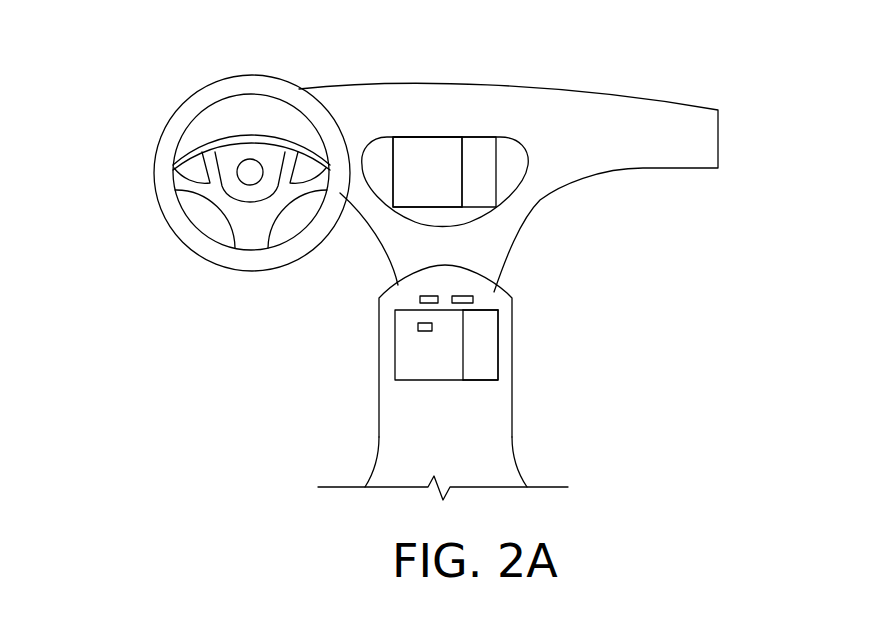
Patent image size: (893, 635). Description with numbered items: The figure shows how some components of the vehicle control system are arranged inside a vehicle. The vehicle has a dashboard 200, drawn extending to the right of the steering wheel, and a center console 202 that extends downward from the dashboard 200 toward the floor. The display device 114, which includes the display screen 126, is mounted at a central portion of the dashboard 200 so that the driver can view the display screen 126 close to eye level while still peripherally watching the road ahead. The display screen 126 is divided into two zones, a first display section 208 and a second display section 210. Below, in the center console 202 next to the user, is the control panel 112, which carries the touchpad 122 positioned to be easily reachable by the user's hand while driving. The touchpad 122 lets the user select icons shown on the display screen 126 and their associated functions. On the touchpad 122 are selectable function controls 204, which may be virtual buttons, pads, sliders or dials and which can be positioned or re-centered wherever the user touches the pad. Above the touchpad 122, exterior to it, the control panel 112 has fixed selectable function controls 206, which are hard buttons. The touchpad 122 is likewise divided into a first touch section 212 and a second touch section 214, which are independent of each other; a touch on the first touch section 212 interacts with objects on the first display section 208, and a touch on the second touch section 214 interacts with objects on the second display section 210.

The dashboard 200 is at (478, 93).
The display device 114 is at (390, 138).
The second display section 210 is at (483, 148).
The display screen 126 is at (425, 150).
The first display section 208 is at (448, 148).
The center console 202 is at (490, 296).
The fixed selectable function controls 206 is at (423, 295).
The control panel 112 is at (386, 326).
The first touch section 212 is at (410, 358).
The selectable function controls 204 is at (427, 332).
The second touch section 214 is at (467, 328).
The touchpad 122 is at (470, 346).